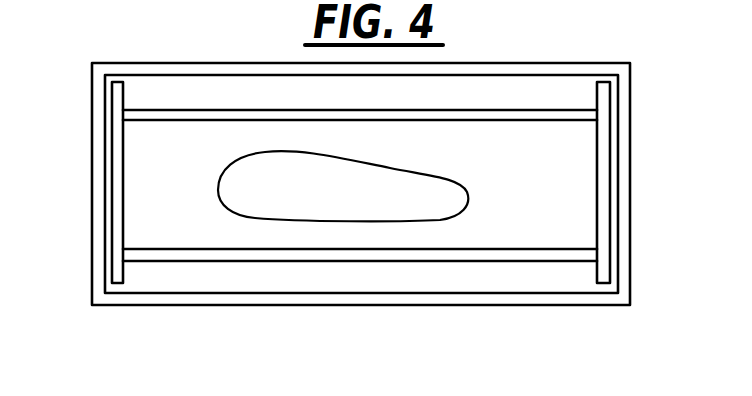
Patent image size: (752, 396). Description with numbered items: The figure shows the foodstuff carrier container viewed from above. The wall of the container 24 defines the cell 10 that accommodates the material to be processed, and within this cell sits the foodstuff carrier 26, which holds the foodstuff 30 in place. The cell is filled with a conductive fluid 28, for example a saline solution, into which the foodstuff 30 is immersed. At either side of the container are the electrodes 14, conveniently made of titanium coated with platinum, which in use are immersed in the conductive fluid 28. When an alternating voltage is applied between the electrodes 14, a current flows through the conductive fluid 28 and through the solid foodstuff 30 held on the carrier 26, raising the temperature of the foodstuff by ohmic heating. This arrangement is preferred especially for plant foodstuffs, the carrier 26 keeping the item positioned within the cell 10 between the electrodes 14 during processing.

The cell 10 is at (377, 222).
The electrodes 14 is at (118, 197).
The wall of the container 24 is at (622, 280).
The foodstuff carrier 26 is at (140, 117).
The conductive fluid 28 is at (577, 188).
The foodstuff 30 is at (338, 212).